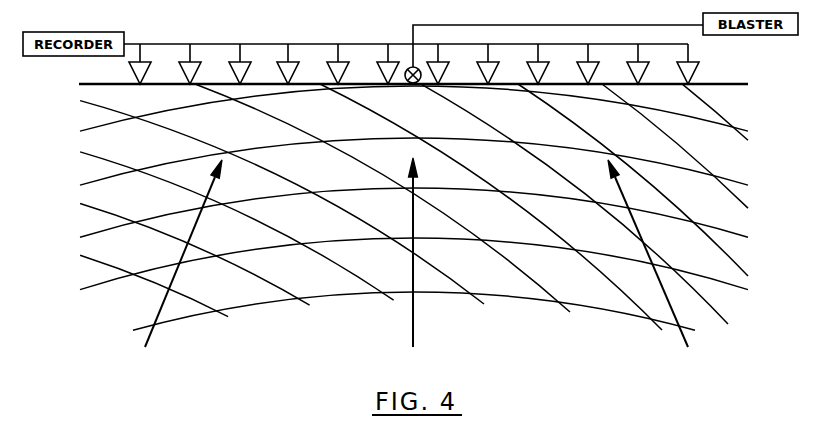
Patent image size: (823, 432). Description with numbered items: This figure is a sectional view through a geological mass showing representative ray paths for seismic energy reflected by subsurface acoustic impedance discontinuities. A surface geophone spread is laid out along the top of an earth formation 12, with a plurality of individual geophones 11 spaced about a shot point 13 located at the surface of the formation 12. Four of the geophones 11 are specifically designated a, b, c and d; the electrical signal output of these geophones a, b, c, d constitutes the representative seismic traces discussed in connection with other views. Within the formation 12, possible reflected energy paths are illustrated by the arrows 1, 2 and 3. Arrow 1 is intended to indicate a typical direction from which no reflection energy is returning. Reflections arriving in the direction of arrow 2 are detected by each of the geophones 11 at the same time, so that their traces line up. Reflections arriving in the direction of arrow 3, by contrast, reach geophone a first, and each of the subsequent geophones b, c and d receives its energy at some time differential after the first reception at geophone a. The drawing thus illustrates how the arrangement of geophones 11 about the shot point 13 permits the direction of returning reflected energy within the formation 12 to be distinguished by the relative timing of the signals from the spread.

The geophones 11 is at (414, 66).
The shot point 13 is at (408, 66).
The earth formation 12 is at (495, 171).
The arrow 1 is at (651, 263).
The arrow 2 is at (413, 262).
The arrow 3 is at (180, 263).
The geophone a is at (338, 64).
The geophone b is at (387, 64).
The geophone c is at (439, 64).
The geophone d is at (519, 97).